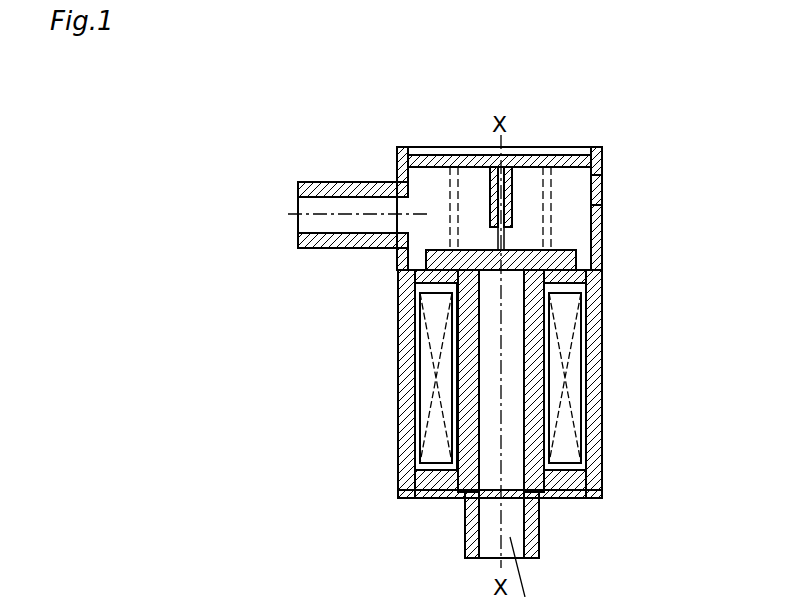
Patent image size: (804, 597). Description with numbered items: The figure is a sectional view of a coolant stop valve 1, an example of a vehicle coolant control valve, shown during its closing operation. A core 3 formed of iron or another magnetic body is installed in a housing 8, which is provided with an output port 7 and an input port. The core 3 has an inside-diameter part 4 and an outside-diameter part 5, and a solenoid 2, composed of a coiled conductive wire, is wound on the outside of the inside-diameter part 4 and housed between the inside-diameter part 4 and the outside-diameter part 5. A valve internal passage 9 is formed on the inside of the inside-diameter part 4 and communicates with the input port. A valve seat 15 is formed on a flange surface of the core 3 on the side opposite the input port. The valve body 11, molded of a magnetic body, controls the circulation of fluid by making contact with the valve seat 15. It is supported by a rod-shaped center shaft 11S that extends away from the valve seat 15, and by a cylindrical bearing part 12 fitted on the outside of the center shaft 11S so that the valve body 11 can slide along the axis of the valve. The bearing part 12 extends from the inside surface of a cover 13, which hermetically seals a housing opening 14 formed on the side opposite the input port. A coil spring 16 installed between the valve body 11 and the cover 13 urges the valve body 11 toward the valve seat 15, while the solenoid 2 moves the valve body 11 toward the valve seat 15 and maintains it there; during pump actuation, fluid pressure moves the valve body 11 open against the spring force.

The coolant stop valve 1 is at (325, 116).
The solenoid 2 is at (398, 377).
The core 3 is at (398, 270).
The inside-diameter part 4 is at (546, 415).
The outside-diameter part 5 is at (585, 462).
The output port 7 is at (313, 205).
The housing 8 is at (605, 188).
The valve internal passage 9 is at (513, 392).
The valve body 11 is at (583, 270).
The center shaft 11S is at (510, 240).
The bearing part 12 is at (515, 173).
The cover 13 is at (557, 175).
The housing opening 14 is at (400, 150).
The valve seat 15 is at (600, 248).
The coil spring 16 is at (445, 190).